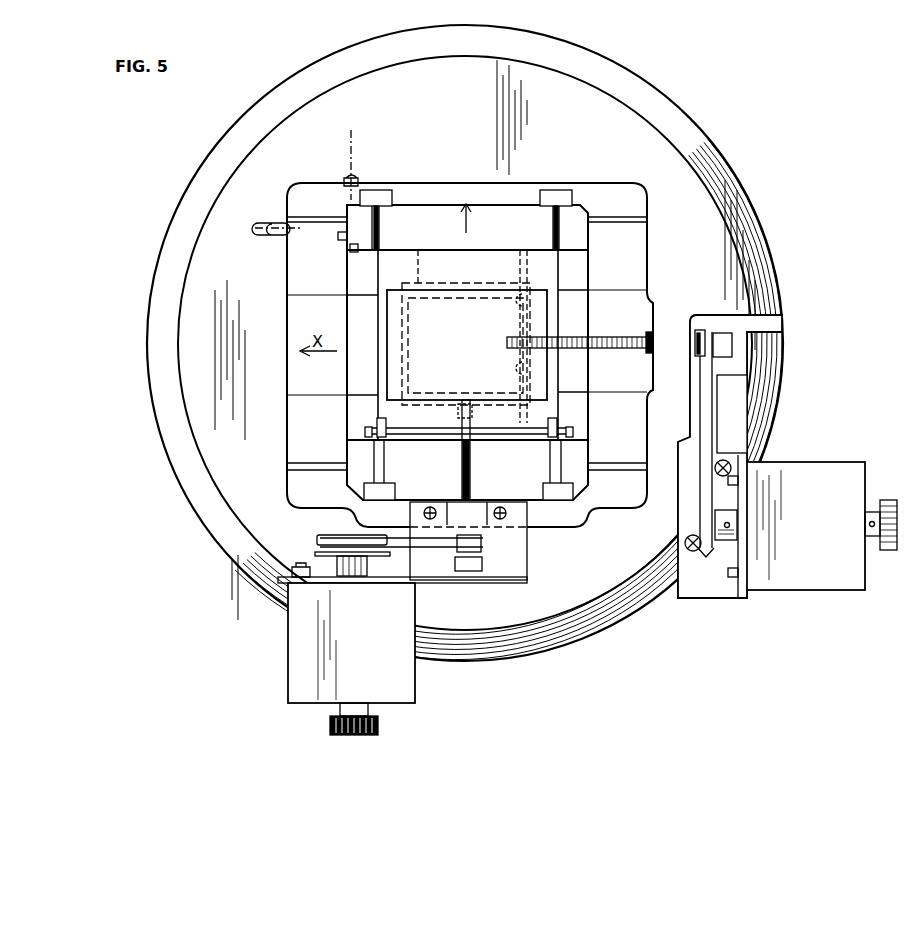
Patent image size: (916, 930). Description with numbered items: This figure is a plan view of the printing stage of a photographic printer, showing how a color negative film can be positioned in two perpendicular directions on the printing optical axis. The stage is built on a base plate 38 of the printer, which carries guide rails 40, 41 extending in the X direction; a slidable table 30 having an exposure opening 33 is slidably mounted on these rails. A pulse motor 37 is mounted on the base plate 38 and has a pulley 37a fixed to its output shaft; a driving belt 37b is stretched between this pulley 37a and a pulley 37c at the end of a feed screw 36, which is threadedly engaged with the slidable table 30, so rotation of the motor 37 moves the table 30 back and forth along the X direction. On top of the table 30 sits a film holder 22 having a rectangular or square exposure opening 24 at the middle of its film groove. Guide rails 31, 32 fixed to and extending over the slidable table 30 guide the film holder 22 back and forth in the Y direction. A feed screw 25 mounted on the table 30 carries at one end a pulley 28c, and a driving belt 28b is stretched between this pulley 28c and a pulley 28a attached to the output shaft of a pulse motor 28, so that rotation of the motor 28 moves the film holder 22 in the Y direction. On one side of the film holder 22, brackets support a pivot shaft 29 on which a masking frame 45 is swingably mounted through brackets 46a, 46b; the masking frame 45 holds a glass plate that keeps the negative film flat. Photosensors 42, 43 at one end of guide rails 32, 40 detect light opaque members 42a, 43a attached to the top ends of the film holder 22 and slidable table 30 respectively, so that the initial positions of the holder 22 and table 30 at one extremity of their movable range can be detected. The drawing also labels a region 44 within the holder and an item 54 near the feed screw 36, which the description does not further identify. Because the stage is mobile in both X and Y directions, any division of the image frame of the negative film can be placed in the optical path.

The film holder 22 is at (575, 402).
The exposure opening 24 is at (540, 365).
The feed screw 25 is at (460, 470).
The pulse motor 28 is at (408, 690).
The pulley 28a is at (372, 558).
The driving belt 28b is at (435, 548).
The pulley 28c is at (483, 547).
The pivot shaft 29 is at (428, 428).
The slidable table 30 is at (436, 190).
The guide rail 31 is at (553, 220).
The guide rail 32 is at (380, 222).
The exposure opening 33 is at (523, 288).
The feed screw 36 is at (630, 332).
The pulse motor 37 is at (800, 592).
The pulley 37a is at (698, 525).
The driving belt 37b is at (705, 418).
The pulley 37c is at (732, 350).
The base plate 38 is at (650, 140).
The guide rail 40 is at (618, 215).
The guide rail 41 is at (615, 462).
The photosensor 42 is at (348, 155).
The light opaque member 42a is at (351, 254).
The photosensor 43 is at (265, 226).
The light opaque member 43a is at (337, 241).
The mask opening 44 is at (467, 326).
The masking frame 45 is at (452, 255).
The bracket 46a is at (378, 425).
The bracket 46b is at (550, 438).
The spring 54 is at (540, 322).